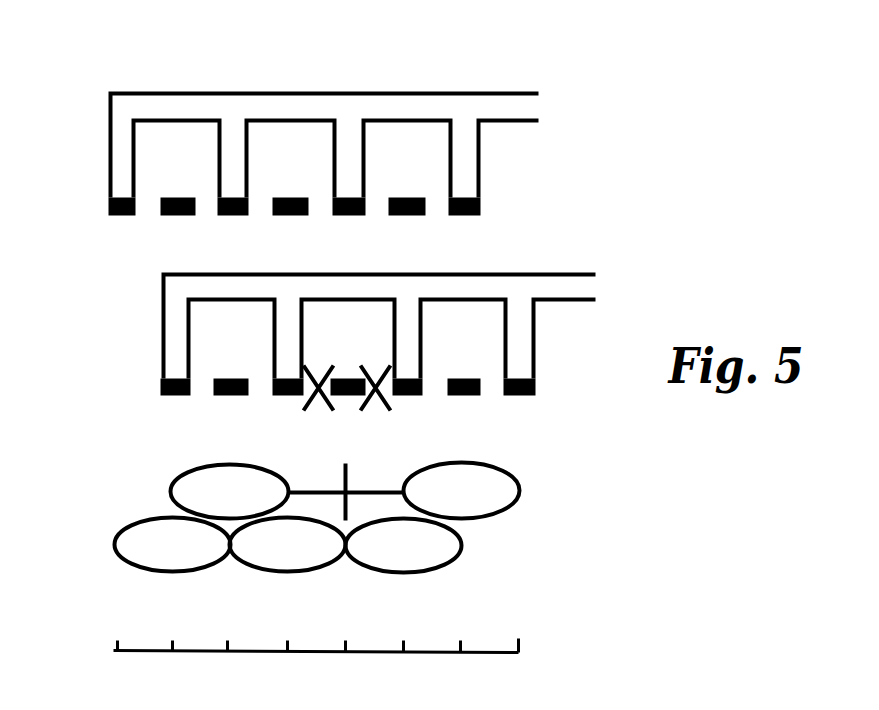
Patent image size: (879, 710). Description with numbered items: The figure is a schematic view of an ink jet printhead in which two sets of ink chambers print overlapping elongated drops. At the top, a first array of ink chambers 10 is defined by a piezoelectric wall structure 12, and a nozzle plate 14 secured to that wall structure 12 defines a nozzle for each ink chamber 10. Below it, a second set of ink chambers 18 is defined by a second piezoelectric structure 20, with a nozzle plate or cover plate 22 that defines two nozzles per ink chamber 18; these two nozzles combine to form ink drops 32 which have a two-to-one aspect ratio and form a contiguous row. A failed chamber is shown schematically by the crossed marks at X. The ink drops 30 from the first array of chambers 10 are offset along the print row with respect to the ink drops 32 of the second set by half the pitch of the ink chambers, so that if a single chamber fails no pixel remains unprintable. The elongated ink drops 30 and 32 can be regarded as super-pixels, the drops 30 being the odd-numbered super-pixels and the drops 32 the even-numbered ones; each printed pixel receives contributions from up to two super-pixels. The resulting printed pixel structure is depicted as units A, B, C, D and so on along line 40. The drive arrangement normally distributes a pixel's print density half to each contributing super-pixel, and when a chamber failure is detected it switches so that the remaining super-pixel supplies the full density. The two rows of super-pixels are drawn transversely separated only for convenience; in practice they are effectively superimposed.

The ink chambers 10 is at (195, 171).
The piezoelectric wall structure 12 is at (463, 105).
The nozzle plate 14 is at (120, 213).
The ink chambers 18 is at (251, 352).
The piezoelectric structure 20 is at (522, 283).
The nozzle plate or cover plate 22 is at (177, 395).
The ink drops 30 is at (122, 528).
The ink drops 32 is at (507, 468).
The line 40 is at (113, 650).